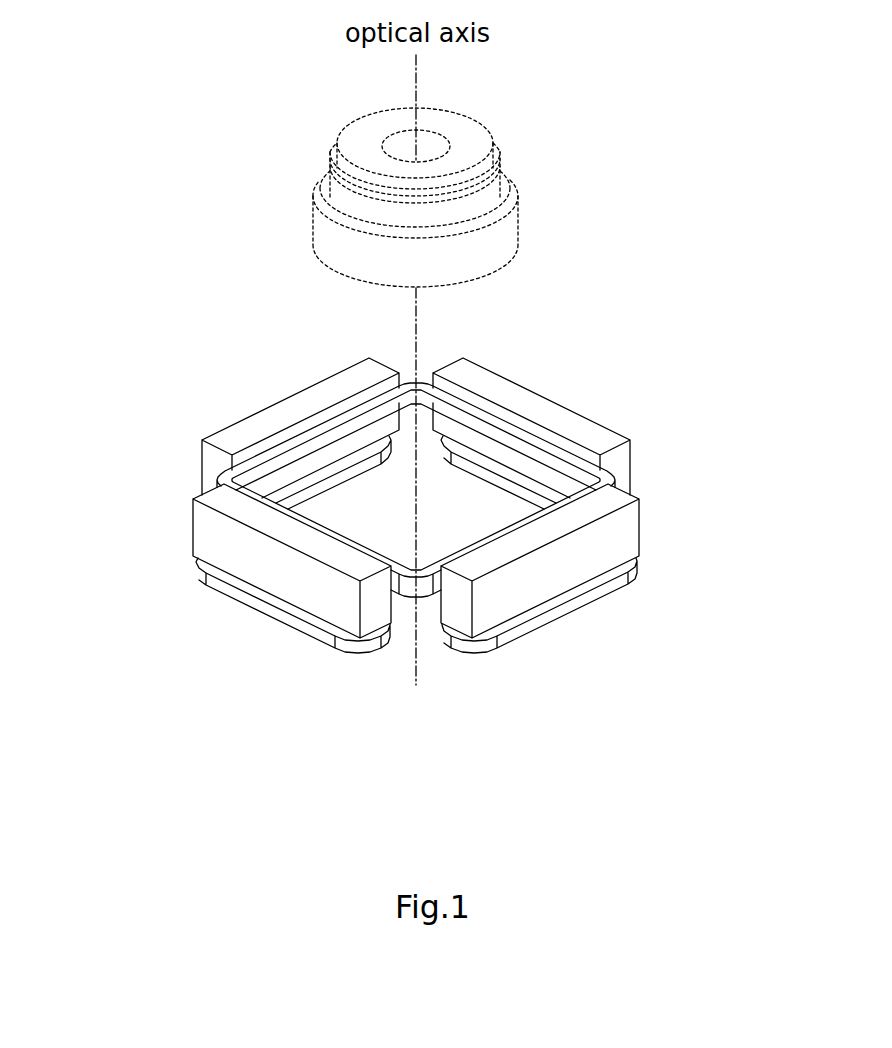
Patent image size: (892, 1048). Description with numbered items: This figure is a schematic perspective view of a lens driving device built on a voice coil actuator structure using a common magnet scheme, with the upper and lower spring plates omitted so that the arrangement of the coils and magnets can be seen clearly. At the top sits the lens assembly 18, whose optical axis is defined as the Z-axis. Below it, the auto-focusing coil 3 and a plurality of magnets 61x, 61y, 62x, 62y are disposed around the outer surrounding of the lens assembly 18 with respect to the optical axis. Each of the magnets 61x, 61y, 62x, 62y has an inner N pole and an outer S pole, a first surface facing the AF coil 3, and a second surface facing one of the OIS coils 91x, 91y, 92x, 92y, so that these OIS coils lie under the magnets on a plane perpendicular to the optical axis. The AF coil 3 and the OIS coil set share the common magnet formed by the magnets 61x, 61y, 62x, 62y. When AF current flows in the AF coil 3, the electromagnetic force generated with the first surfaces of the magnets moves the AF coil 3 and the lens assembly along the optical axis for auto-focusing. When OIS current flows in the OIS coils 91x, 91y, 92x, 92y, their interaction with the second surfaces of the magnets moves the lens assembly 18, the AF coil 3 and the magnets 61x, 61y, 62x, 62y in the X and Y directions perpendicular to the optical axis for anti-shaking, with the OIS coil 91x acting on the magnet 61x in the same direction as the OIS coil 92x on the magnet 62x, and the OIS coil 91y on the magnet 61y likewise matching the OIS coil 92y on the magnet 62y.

The lens assembly 18 is at (508, 225).
The auto-focusing coil 3 is at (411, 381).
The magnet 61x is at (620, 540).
The magnet 61y is at (213, 540).
The magnet 62x is at (287, 410).
The magnet 62y is at (543, 410).
The OIS coil 91x is at (558, 603).
The OIS coil 91y is at (277, 605).
The OIS coil 92x is at (337, 478).
The OIS coil 92y is at (522, 490).